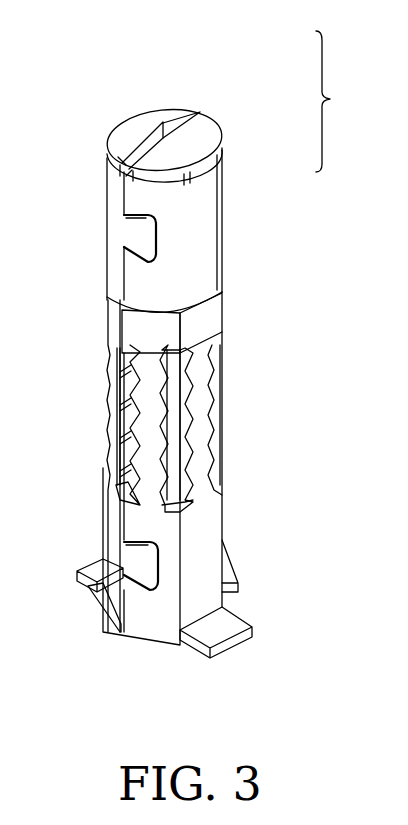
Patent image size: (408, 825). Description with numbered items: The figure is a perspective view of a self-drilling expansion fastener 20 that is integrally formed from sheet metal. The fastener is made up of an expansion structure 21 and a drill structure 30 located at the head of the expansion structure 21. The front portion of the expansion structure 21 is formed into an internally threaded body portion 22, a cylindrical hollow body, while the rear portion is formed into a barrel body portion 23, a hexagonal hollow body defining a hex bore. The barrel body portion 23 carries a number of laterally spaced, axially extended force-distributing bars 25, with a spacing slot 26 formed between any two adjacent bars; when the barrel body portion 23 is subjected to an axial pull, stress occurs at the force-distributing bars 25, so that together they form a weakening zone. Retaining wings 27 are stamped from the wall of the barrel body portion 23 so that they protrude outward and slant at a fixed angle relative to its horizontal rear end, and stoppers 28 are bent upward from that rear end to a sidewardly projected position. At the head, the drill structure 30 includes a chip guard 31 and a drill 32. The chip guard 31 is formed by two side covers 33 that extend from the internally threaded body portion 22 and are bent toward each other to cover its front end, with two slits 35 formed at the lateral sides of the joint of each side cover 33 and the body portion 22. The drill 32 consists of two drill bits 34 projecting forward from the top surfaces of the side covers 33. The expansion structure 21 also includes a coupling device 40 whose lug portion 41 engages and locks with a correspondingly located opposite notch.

The self-drilling expansion fastener 20 is at (340, 101).
The expansion structure 21 is at (241, 212).
The internally threaded body portion 22 is at (235, 262).
The barrel body portion 23 is at (236, 309).
The force-distributing bars 25 is at (117, 368).
The spacing slot 26 is at (175, 463).
The retaining wing 27 is at (230, 570).
The stopper 28 is at (85, 570).
The drill structure 30 is at (253, 76).
The chip guard 31 is at (112, 108).
The drill 32 is at (155, 105).
The side cover 33 is at (120, 133).
The drill bit 34 is at (183, 120).
The slit 35 is at (213, 182).
The coupling device 40 is at (129, 274).
The lug portion 41 is at (138, 242).